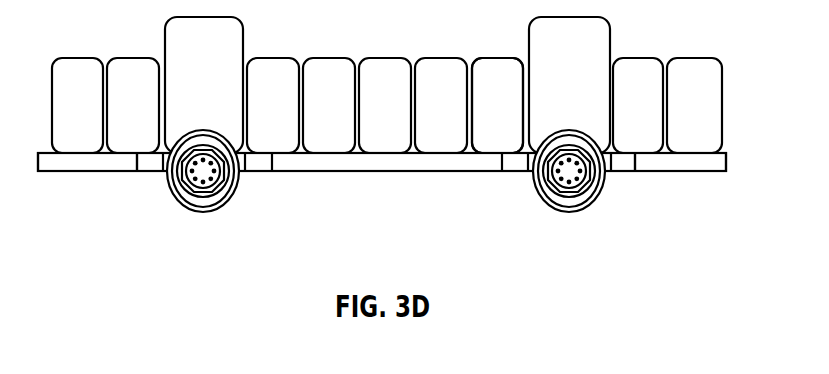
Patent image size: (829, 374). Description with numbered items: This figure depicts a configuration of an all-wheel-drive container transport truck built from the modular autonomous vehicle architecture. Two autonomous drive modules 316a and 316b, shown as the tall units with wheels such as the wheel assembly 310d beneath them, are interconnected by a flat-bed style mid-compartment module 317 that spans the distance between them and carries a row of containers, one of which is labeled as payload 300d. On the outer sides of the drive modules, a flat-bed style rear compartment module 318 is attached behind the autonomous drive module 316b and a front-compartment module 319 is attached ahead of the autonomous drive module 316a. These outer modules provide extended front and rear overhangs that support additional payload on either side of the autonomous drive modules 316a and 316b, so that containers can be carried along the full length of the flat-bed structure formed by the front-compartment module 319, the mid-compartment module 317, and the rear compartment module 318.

The battery module 300d is at (496, 68).
The wheel assembly 310d is at (572, 183).
The autonomous drive module 316a is at (231, 53).
The autonomous drive module 316b is at (598, 53).
The flat-bed style mid-compartment module 317 is at (386, 162).
The flat-bed style rear compartment module 318 is at (678, 163).
The front-compartment module 319 is at (89, 163).